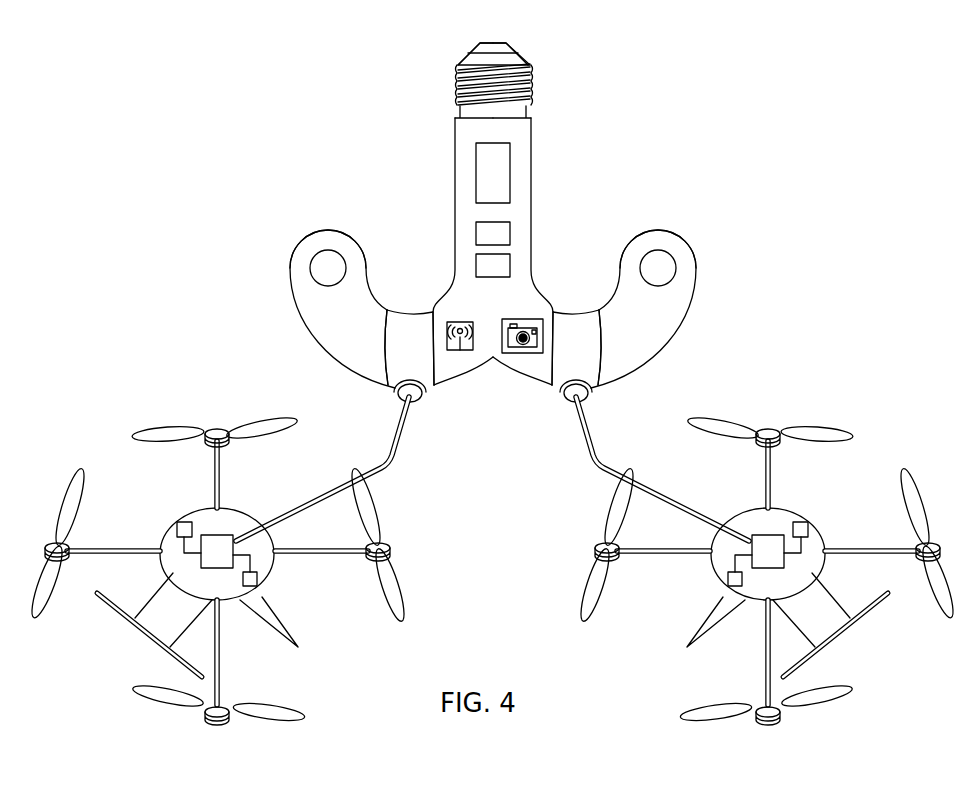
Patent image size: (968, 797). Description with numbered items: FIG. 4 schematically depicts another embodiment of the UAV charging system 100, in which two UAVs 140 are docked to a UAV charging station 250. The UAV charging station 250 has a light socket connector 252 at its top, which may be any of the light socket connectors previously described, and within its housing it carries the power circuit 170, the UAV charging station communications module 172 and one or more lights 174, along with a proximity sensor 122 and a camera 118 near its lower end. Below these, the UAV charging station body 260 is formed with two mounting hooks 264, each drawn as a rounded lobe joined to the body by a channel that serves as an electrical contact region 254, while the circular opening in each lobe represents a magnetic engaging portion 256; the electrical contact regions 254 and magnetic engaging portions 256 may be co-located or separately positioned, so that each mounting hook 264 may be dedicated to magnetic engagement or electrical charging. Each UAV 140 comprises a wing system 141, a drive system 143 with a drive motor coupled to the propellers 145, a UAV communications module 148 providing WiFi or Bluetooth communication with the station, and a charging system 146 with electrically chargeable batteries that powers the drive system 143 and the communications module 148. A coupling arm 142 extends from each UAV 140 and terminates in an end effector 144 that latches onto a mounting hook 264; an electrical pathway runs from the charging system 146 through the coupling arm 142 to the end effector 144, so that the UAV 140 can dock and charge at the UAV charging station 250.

The UAV charging system 100 is at (838, 151).
The camera 118 is at (525, 353).
The proximity sensor 122 is at (458, 351).
The UAV 140 is at (228, 398).
The wing system 141 is at (77, 568).
The coupling arm 142 is at (320, 495).
The drive system 143 is at (256, 580).
The end effector 144 is at (425, 399).
The propeller 145 is at (172, 431).
The charging system 146 is at (203, 528).
The UAV communications module 148 is at (176, 528).
The power circuit 170 is at (510, 175).
The UAV charging station communications module 172 is at (510, 232).
The light 174 is at (510, 268).
The UAV charging station 250 is at (608, 129).
The light socket connector 252 is at (506, 58).
The electrical contact region 254 is at (412, 317).
The magnetic engaging portion 256 is at (309, 269).
The UAV charging station body 260 is at (273, 234).
The mounting hook 264 is at (322, 231).